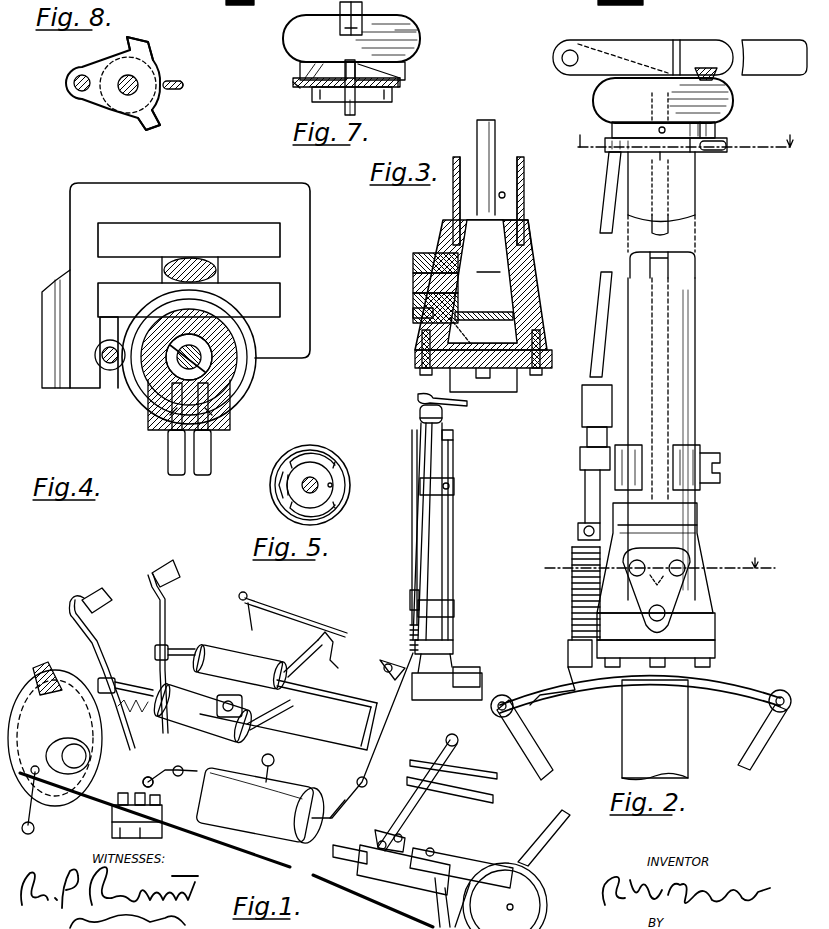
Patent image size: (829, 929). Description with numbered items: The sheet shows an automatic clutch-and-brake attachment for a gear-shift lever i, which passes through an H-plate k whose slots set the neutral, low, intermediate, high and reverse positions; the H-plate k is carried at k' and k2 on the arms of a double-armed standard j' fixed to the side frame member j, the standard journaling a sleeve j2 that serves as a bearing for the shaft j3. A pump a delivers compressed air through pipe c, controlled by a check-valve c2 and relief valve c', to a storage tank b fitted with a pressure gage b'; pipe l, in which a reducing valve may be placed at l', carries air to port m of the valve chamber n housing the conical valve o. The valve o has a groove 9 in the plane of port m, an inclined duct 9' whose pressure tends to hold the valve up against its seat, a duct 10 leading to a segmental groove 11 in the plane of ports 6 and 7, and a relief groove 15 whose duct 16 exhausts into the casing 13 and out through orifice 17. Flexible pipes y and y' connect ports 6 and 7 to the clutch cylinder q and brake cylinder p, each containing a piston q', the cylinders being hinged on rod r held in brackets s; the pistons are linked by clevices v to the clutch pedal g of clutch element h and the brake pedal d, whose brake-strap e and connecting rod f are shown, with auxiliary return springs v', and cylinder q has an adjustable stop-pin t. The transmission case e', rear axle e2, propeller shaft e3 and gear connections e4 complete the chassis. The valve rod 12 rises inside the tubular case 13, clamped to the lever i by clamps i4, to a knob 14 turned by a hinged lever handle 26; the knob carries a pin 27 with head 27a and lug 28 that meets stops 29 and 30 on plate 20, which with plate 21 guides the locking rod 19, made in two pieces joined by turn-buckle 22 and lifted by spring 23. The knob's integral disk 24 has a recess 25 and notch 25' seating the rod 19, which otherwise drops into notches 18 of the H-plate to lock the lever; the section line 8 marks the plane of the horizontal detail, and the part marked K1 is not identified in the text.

In FIG. 3, the port 6 is at (415, 262).
In FIG. 2, the port 6 is at (645, 565).
In FIG. 4, the port 6 is at (180, 415).
In FIG. 2, the port 7 is at (685, 565).
In FIG. 4, the port 7 is at (233, 410).
In FIG. 2, the section line 8— 8 is at (685, 137).
In FIG. 3, the circumferential groove 9 is at (513, 313).
In FIG. 5, the circumferential groove 9 is at (310, 486).
In FIG. 3, the inclined duct 9' is at (426, 336).
In FIG. 3, the duct 10 is at (413, 294).
In FIG. 4, the duct 10 is at (175, 400).
In FIG. 5, the duct 10 is at (283, 486).
In FIG. 3, the segmental circumferential groove 11 is at (413, 277).
In FIG. 4, the segmental circumferential groove 11 is at (160, 395).
In FIG. 5, the segmental circumferential groove 11 is at (287, 493).
In FIG. 8, the valve rod 12 is at (122, 90).
In FIG. 3, the valve rod 12 is at (497, 135).
In FIG. 2, the valve rod 12 is at (668, 228).
In FIG. 4, the valve rod 12 is at (205, 368).
In FIG. 5, the valve rod 12 is at (318, 478).
In FIG. 7, the tubular case 13 is at (392, 97).
In FIG. 3, the tubular case 13 is at (508, 172).
In FIG. 2, the tubular case 13 is at (683, 202).
In FIG. 1, the tubular case 13 is at (438, 447).
In FIG. 7, the knob 14 is at (298, 38).
In FIG. 2, the knob 14 is at (605, 100).
In FIG. 3, the exhaust or relief groove 15 is at (503, 273).
In FIG. 4, the exhaust or relief groove 15 is at (215, 365).
In FIG. 5, the exhaust or relief groove 15 is at (320, 495).
In FIG. 3, the outlet duct 16 is at (522, 253).
In FIG. 5, the outlet duct 16 is at (333, 485).
In FIG. 3, the outlet orifice 17 is at (506, 195).
In FIG. 2, the notches 18 is at (538, 692).
In FIG. 4, the notches 18 is at (60, 335).
In FIG. 8, the locking rod 19 is at (74, 83).
In FIG. 7, the locking rod 19 is at (355, 112).
In FIG. 2, the locking rod 19 is at (612, 200).
In FIG. 4, the locking rod 19 is at (105, 360).
In FIG. 1, the locking rod 19 is at (420, 447).
In FIG. 8, the plate 20 is at (157, 65).
In FIG. 7, the plate 20 is at (296, 84).
In FIG. 2, the plate 20 is at (605, 147).
In FIG. 3, the plate 21 is at (552, 360).
In FIG. 2, the plate 21 is at (705, 650).
In FIG. 2, the turn-buckle 22 is at (585, 415).
In FIG. 1, the turn-buckle 22 is at (410, 605).
In FIG. 2, the spring 23 is at (575, 552).
In FIG. 1, the spring 23 is at (410, 645).
In FIG. 7, the disk 24 is at (405, 72).
In FIG. 2, the disk 24 is at (705, 132).
In FIG. 7, the recess 25 is at (303, 71).
In FIG. 7, the notch 25' is at (432, 34).
In FIG. 7, the lever handle 26 is at (362, 8).
In FIG. 2, the lever handle 26 is at (763, 65).
In FIG. 1, the lever handle 26 is at (467, 403).
In FIG. 8, the pin 27 is at (178, 78).
In FIG. 2, the pin 27 is at (715, 126).
In FIG. 1, the pin 27 is at (444, 414).
In FIG. 2, the head 27a is at (706, 70).
In FIG. 8, the lug 28 is at (184, 86).
In FIG. 2, the lug 28 is at (726, 145).
In FIG. 8, the stop 29 is at (152, 125).
In FIG. 7, the stop 29 is at (400, 82).
In FIG. 2, the stop 29 is at (690, 156).
In FIG. 8, the stop 30 is at (150, 45).
In FIG. 7, the stop 30 is at (300, 86).
In FIG. 2, the stop 30 is at (695, 152).
In FIG. 1, the pump a is at (226, 850).
In FIG. 1, the storage tank b is at (262, 806).
In FIG. 1, the pressure gage b' is at (284, 768).
In FIG. 1, the pipe c is at (168, 770).
In FIG. 1, the relief valve c' is at (160, 785).
In FIG. 1, the check-valve c2 is at (178, 766).
In FIG. 1, the brake pedal d is at (168, 608).
In FIG. 1, the brake-strap e is at (523, 896).
In FIG. 1, the transmission case e' is at (435, 878).
In FIG. 1, the rear axle e2 is at (560, 830).
In FIG. 1, the propeller shaft e3 is at (345, 862).
In FIG. 1, the connections e4 is at (433, 845).
In FIG. 1, the connecting rod f is at (338, 632).
In FIG. 1, the clutch pedal g is at (72, 627).
In FIG. 1, the clutch element h is at (40, 695).
In FIG. 3, the gear-shift lever i is at (508, 383).
In FIG. 2, the gear-shift lever i is at (690, 260).
In FIG. 4, the gear-shift lever i is at (235, 272).
In FIG. 1, the gear-shift lever i is at (453, 470).
In FIG. 2, the clamps i4 is at (685, 448).
In FIG. 1, the clamps i4 is at (455, 486).
In FIG. 1, the side frame member j is at (440, 815).
In FIG. 1, the double-armed standard j' is at (468, 739).
In FIG. 1, the sleeve j2 is at (415, 800).
In FIG. 1, the shaft j3 is at (375, 828).
In FIG. 2, the H-plate k is at (641, 690).
In FIG. 4, the H-plate k is at (209, 285).
In FIG. 1, the H-plate k is at (460, 670).
In FIG. 2, the support point k' is at (641, 707).
In FIG. 2, the support point k2 is at (497, 714).
In FIG. 1, the bracket K1 is at (385, 660).
In FIG. 1, the pipe l is at (362, 735).
In FIG. 1, the reducing valve l' is at (342, 787).
In FIG. 3, the port m is at (413, 312).
In FIG. 2, the port m is at (665, 617).
In FIG. 3, the valve chamber n is at (443, 228).
In FIG. 2, the valve chamber n is at (702, 583).
In FIG. 4, the valve chamber n is at (225, 348).
In FIG. 3, the conical valve o is at (500, 300).
In FIG. 2, the conical valve o is at (705, 600).
In FIG. 4, the conical valve o is at (235, 358).
In FIG. 5, the conical valve o is at (345, 470).
In FIG. 1, the cylinder p is at (262, 666).
In FIG. 1, the cylinder q is at (203, 717).
In FIG. 1, the piston q' is at (252, 726).
In FIG. 1, the rod r is at (300, 652).
In FIG. 1, the brackets s is at (336, 660).
In FIG. 1, the adjustable stop-pin t is at (222, 695).
In FIG. 1, the clevices v is at (149, 655).
In FIG. 1, the auxiliary springs v' is at (155, 701).
In FIG. 4, the flexible pipe y is at (206, 452).
In FIG. 1, the flexible pipe y is at (288, 726).
In FIG. 1, the flexible pipe y' is at (327, 685).